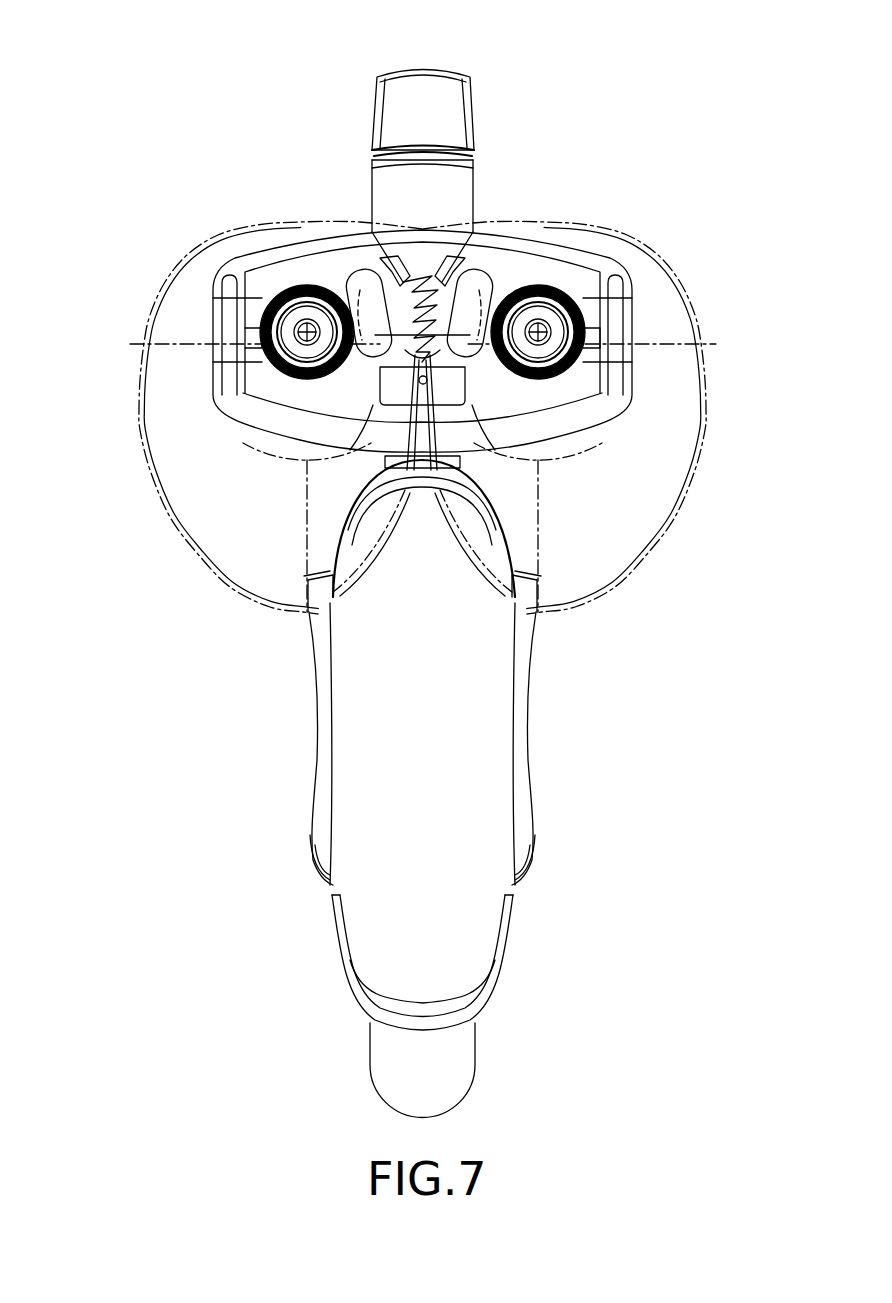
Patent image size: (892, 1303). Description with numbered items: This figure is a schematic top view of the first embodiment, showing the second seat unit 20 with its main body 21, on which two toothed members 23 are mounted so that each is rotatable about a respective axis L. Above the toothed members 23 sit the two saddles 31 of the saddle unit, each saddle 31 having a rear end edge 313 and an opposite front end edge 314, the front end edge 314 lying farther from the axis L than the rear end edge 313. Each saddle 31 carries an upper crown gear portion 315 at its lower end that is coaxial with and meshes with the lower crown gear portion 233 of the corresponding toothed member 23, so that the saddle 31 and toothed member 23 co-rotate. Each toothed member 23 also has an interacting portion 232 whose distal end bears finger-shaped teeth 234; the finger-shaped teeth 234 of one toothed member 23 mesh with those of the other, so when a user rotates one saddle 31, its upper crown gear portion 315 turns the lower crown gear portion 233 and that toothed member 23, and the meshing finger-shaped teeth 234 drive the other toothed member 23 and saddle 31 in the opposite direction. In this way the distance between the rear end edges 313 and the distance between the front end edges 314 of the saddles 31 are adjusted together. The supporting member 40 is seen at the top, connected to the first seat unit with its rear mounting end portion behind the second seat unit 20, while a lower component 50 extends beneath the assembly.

The second seat unit 20 is at (422, 247).
The main body 21 is at (422, 233).
The toothed member 23 is at (350, 268).
The interacting portion 232 is at (487, 265).
The finger-shaped teeth 234 is at (405, 282).
The rear end edge 313 is at (233, 228).
The front end edge 314 is at (300, 612).
The upper crown gear portion 315 is at (578, 290).
The lower crown gear portion 233 is at (565, 330).
The saddle 31 is at (170, 421).
The supporting member 40 is at (425, 106).
The grip 50 is at (380, 935).
The axis L is at (420, 345).